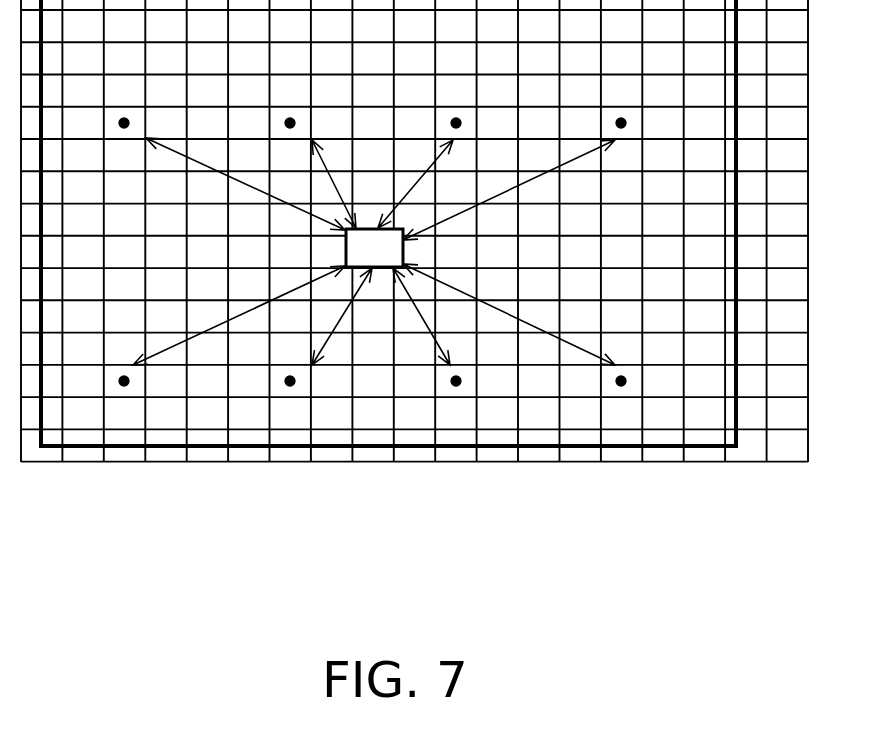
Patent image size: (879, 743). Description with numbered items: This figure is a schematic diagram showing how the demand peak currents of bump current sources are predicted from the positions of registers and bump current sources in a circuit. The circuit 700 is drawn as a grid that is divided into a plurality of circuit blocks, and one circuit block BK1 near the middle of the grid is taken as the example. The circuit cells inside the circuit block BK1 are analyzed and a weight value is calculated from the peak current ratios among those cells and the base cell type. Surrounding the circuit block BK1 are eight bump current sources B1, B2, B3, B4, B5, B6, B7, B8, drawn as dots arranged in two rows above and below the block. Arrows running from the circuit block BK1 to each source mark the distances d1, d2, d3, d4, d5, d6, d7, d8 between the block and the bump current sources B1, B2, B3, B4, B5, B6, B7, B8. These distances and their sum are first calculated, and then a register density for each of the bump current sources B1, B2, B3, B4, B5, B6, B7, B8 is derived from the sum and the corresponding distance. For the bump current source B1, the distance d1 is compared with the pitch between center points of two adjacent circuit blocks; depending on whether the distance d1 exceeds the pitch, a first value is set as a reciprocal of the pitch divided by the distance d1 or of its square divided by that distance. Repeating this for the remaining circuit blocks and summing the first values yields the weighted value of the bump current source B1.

The circuit 700 is at (822, 558).
The circuit block BK1 is at (348, 250).
The bump current source B1 is at (123, 102).
The bump current source B2 is at (289, 102).
The bump current source B3 is at (455, 102).
The bump current source B4 is at (620, 102).
The bump current source B5 is at (620, 402).
The bump current source B6 is at (455, 402).
The bump current source B7 is at (289, 402).
The bump current source B8 is at (123, 402).
The distance d1 is at (245, 184).
The distance d2 is at (342, 184).
The distance d3 is at (417, 184).
The distance d4 is at (509, 190).
The distance d5 is at (509, 314).
The distance d6 is at (429, 316).
The distance d7 is at (342, 316).
The distance d8 is at (239, 315).